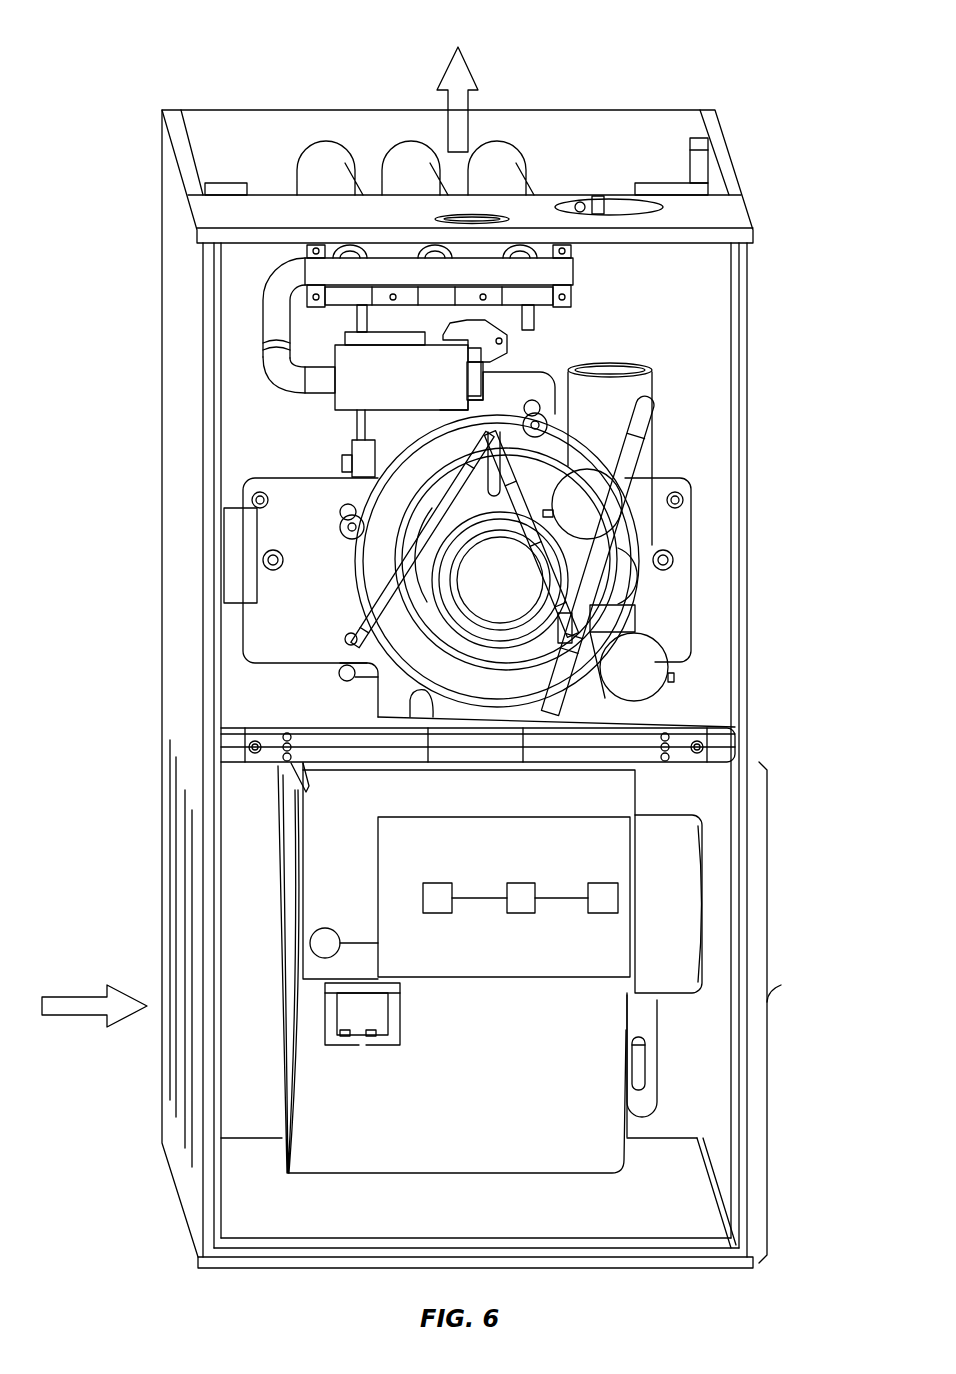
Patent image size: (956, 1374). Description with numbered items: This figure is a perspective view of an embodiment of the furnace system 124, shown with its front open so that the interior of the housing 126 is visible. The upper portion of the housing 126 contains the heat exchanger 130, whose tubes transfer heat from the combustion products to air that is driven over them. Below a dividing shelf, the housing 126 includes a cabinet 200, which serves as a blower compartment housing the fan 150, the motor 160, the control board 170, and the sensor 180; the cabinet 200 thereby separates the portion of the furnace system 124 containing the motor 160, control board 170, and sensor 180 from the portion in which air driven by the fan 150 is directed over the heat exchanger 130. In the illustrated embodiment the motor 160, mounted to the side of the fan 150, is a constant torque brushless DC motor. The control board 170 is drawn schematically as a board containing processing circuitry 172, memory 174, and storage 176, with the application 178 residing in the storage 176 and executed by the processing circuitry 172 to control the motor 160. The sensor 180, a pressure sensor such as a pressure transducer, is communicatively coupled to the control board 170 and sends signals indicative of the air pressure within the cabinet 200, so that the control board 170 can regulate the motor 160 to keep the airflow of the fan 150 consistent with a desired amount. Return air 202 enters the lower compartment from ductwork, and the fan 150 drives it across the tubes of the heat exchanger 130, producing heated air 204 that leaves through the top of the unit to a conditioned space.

The furnace system 124 is at (570, 26).
The housing 126 is at (797, 213).
The heat exchanger 130 is at (323, 155).
The fan 150 is at (453, 1174).
The motor 160 is at (652, 815).
The control board 170 is at (504, 884).
The processing circuitry 172 is at (520, 883).
The memory 174 is at (601, 883).
The storage 176 is at (436, 883).
The application 178 is at (449, 913).
The sensor 180 is at (326, 929).
The cabinet 200 is at (517, 995).
The return air 202 is at (87, 995).
The heated air 204 is at (469, 64).